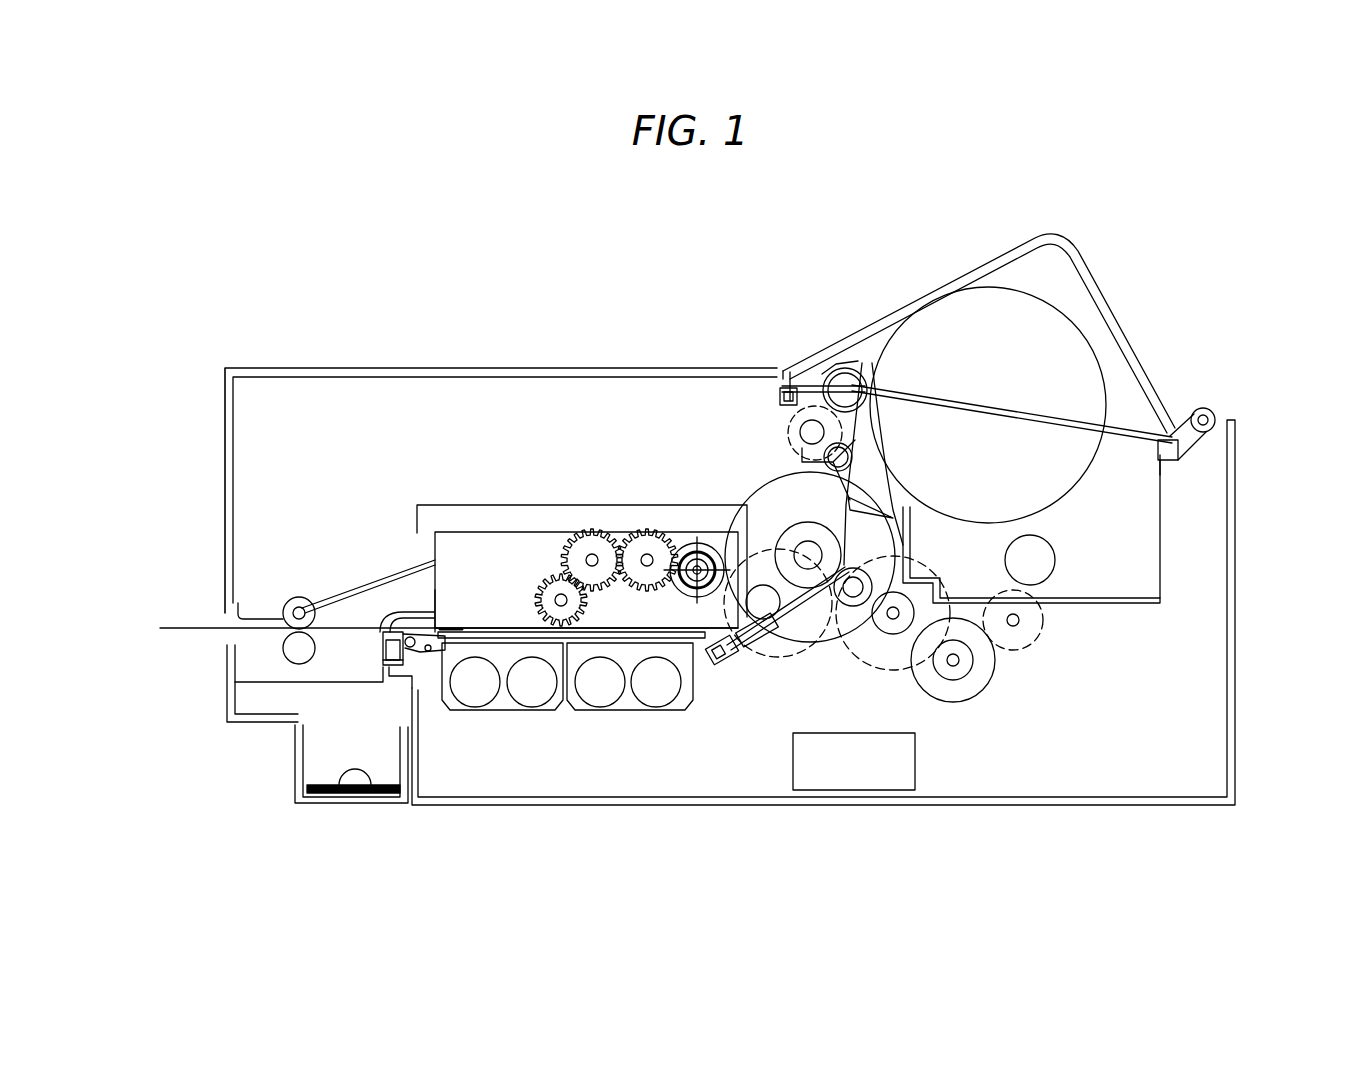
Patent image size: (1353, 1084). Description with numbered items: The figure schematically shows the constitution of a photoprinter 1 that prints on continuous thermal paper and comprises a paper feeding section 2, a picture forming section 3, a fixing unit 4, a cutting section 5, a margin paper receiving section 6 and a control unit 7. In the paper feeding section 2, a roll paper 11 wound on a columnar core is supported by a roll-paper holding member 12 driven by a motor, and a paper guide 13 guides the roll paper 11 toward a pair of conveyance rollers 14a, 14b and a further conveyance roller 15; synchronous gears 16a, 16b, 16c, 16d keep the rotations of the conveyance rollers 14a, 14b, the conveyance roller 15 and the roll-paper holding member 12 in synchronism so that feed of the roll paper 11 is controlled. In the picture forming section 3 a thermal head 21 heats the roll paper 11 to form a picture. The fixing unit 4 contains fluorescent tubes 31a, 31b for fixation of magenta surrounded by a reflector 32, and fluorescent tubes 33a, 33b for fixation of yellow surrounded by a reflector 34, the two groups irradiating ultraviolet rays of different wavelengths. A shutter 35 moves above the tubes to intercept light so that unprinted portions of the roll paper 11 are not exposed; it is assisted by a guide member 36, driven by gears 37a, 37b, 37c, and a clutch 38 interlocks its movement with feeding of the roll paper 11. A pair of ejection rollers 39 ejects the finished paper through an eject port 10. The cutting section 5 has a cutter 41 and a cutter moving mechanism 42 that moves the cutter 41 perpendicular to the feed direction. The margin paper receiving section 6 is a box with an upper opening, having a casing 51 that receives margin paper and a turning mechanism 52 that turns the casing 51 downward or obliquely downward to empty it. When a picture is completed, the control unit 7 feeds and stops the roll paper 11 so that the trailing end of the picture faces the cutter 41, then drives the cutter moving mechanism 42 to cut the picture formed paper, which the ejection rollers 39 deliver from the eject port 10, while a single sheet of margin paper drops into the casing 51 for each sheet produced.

The photoprinter 1 is at (650, 300).
The paper feeding section 2 is at (1152, 328).
The picture forming section 3 is at (790, 657).
The fixing unit 4 is at (562, 495).
The cutting section 5 is at (388, 608).
The margin paper receiving section 6 is at (290, 781).
The control unit 7 is at (908, 778).
The eject port 10 is at (210, 620).
The roll paper 11 is at (930, 350).
The roll-paper holding member 12 is at (1100, 460).
The paper guide 13 is at (865, 474).
The conveyance roller 14a is at (770, 482).
The conveyance roller 14b is at (858, 568).
The conveyance roller 15 is at (762, 562).
The synchronous gear 16a is at (1057, 562).
The synchronous gear 16b is at (1020, 651).
The synchronous gear 16c is at (950, 703).
The synchronous gear 16d is at (876, 670).
The thermal head 21 is at (738, 650).
The fluorescent tube 31a is at (656, 708).
The fluorescent tube 31b is at (600, 708).
The reflector 32 is at (690, 710).
The fluorescent tube 33a is at (532, 708).
The fluorescent tube 33b is at (475, 708).
The reflector 34 is at (448, 712).
The shutter 35 is at (453, 628).
The guide member 36 is at (622, 632).
The gear 37a is at (638, 532).
The gear 37b is at (583, 552).
The gear 37c is at (540, 598).
The clutch 38 is at (695, 545).
The pair of ejection rollers 39 is at (300, 598).
The cutter 41 is at (403, 624).
The cutter moving mechanism 42 is at (395, 668).
The casing 51 is at (392, 797).
The turning mechanism 52 is at (355, 795).